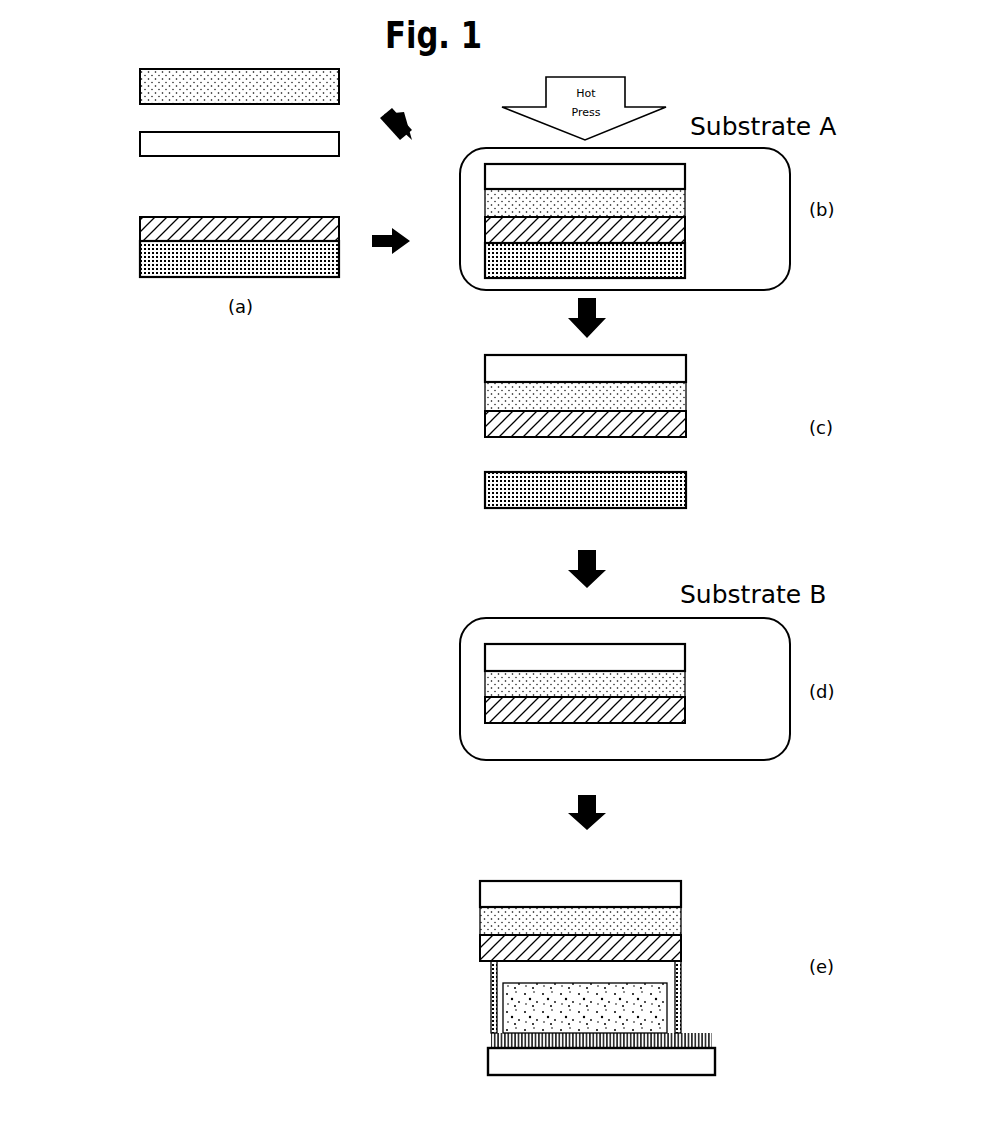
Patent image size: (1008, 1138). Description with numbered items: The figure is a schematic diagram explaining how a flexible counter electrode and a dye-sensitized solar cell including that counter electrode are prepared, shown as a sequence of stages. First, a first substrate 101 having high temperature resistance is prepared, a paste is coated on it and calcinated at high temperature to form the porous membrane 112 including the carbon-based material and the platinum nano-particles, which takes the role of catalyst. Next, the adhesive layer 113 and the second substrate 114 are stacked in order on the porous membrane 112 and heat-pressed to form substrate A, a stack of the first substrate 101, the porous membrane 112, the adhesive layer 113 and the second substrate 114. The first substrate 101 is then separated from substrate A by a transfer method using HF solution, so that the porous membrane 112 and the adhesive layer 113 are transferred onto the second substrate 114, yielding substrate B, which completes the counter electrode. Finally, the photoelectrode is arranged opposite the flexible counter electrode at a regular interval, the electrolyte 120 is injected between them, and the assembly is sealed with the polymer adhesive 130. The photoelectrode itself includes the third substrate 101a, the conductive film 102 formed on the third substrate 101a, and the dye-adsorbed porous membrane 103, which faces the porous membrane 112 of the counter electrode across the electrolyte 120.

The second substrate 114 is at (138, 82).
The adhesive layer 113 is at (138, 143).
The porous membrane including carbon-based material and platinum nano-particles 112 is at (138, 223).
The first substrate 101 is at (138, 258).
The electrolyte 120 is at (520, 973).
The polymer adhesive layer 130 is at (683, 983).
The dye-adsorbed porous membrane 103 is at (502, 1003).
The conductive film 102 is at (490, 1040).
The third substrate 101a is at (488, 1063).